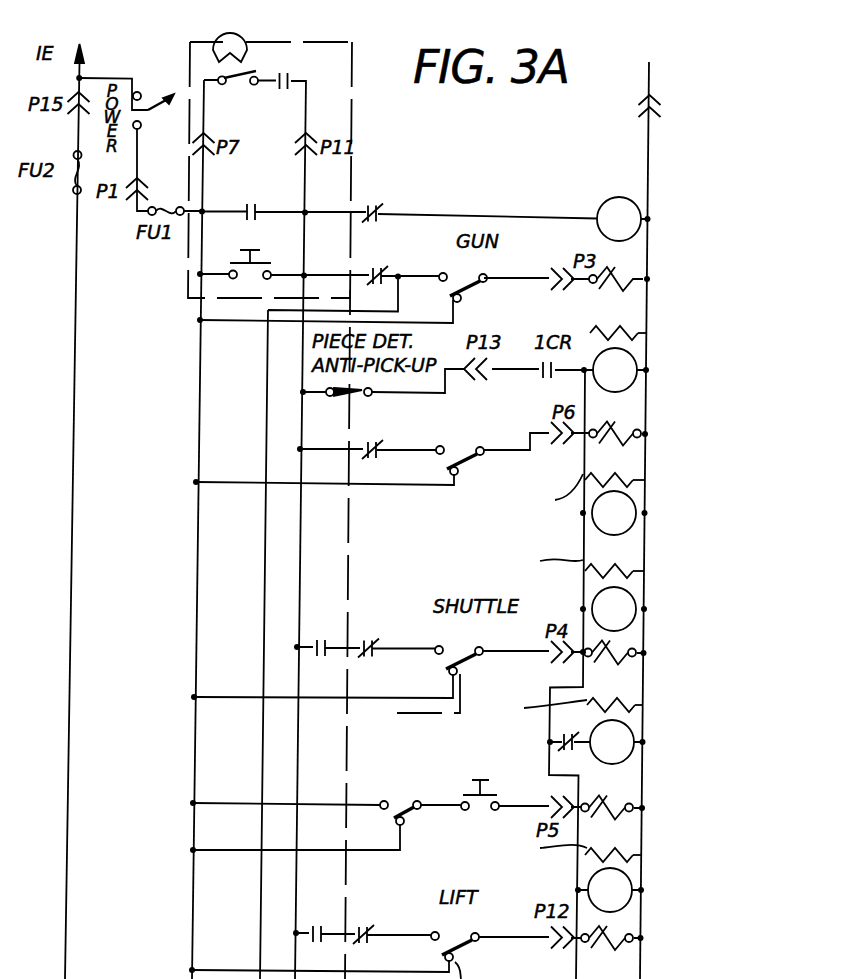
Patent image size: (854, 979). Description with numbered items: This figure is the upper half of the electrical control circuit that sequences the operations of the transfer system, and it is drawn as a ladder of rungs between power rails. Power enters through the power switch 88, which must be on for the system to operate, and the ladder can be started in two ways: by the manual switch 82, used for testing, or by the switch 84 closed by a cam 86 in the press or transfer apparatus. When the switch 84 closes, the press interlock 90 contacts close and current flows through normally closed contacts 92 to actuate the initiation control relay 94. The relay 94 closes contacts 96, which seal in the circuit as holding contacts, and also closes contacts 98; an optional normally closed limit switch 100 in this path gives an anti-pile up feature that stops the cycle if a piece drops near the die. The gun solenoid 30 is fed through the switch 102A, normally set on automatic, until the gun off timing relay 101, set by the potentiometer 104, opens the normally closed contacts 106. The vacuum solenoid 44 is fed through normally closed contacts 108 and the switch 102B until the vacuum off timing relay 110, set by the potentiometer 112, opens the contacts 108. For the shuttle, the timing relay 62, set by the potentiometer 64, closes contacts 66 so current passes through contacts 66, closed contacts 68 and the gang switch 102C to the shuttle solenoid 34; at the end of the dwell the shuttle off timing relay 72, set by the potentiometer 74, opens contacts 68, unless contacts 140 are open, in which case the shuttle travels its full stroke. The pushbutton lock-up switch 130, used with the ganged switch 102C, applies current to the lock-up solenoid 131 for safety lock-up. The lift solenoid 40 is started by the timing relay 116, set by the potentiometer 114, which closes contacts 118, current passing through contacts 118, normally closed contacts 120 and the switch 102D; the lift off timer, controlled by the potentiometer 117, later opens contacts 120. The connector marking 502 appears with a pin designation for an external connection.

The cam 86 is at (250, 9).
The power switch 88 is at (147, 108).
The press interlock contacts 90 is at (291, 72).
The switch 84 is at (258, 86).
The contacts 96 is at (297, 172).
The manual switch 82 is at (247, 249).
The normally closed contacts 92 is at (368, 207).
The initiation control relay 94 is at (626, 197).
The normally closed contacts 106 is at (385, 268).
The switch 102A is at (474, 276).
The gun solenoid 30 is at (620, 267).
The potentiometer 104 is at (622, 325).
The gun off timing relay 101 is at (647, 352).
The contacts 98 is at (540, 382).
The limit switch 100 is at (346, 396).
The vacuum solenoid 44 is at (617, 430).
The normally closed contacts 108 is at (381, 458).
The switch 102B is at (459, 474).
The potentiometer 112 is at (625, 468).
The vacuum off timing relay 110 is at (583, 528).
The potentiometer 64 is at (627, 568).
The contacts 66 is at (322, 640).
The closed contacts 68 is at (362, 640).
The timing relay 62 is at (583, 607).
The gang switch 102C is at (478, 655).
The shuttle solenoid 34 is at (610, 662).
The potentiometer 74 is at (637, 700).
The contacts 140 is at (576, 750).
The shuttle off timing relay 72 is at (627, 758).
The lock-up switch 130 is at (489, 782).
The lock-up solenoid 131 is at (603, 812).
The potentiometer 114 is at (637, 853).
The timing relay 116 is at (578, 886).
The contacts 118 is at (332, 899).
The normally closed contacts 120 is at (358, 926).
The switch 102D is at (449, 934).
The lift solenoid 40 is at (607, 946).
The potentiometer 117 is at (642, 978).
The plug connector P2 502 is at (671, 121).